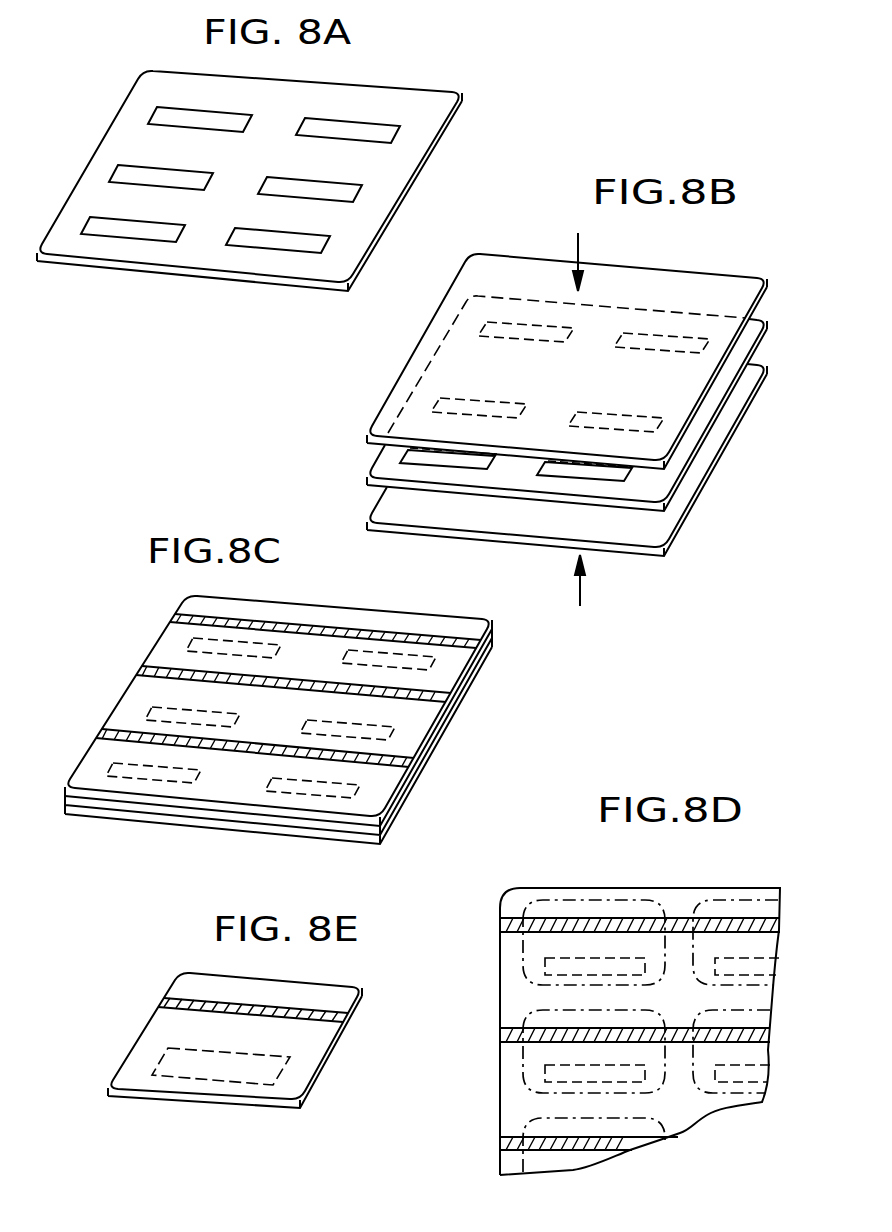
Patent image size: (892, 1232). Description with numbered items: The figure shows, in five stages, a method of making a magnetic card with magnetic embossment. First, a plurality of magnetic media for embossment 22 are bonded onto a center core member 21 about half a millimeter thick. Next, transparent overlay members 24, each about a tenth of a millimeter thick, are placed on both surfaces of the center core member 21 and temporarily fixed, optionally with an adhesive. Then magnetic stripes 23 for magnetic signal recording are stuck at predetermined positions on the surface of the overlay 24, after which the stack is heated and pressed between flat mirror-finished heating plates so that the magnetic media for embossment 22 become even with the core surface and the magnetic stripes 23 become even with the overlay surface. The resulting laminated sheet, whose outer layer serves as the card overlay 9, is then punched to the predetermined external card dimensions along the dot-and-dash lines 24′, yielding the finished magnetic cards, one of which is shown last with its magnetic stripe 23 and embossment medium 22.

In FIG. 8D, the overlay 9 is at (710, 888).
In FIG. 8A, the center core member 21 is at (447, 133).
In FIG. 8B, the center core member 21 is at (760, 322).
In FIG. 8C, the center core member 21 is at (488, 650).
In FIG. 8A, the magnetic media for embossment 22 is at (87, 224).
In FIG. 8B, the magnetic media for embossment 22 is at (417, 466).
In FIG. 8C, the magnetic media for embossment 22 is at (143, 780).
In FIG. 8D, the magnetic media for embossment 22 is at (540, 966).
In FIG. 8E, the magnetic media for embossment 22 is at (175, 1070).
In FIG. 8C, the magnetic stripes 23 is at (428, 627).
In FIG. 8D, the magnetic stripes 23 is at (508, 928).
In FIG. 8E, the magnetic stripes 23 is at (167, 1002).
In FIG. 8B, the transparent overlay members 24 is at (722, 282).
In FIG. 8C, the transparent overlay members 24 is at (473, 625).
In FIG. 8D, the dot-and-dash lines 24′ is at (575, 902).